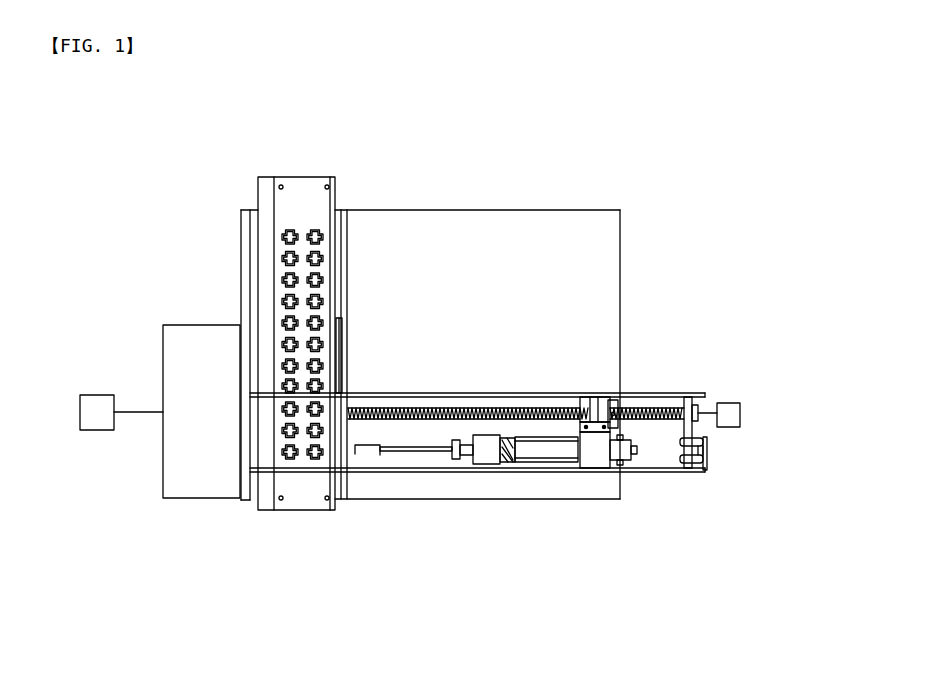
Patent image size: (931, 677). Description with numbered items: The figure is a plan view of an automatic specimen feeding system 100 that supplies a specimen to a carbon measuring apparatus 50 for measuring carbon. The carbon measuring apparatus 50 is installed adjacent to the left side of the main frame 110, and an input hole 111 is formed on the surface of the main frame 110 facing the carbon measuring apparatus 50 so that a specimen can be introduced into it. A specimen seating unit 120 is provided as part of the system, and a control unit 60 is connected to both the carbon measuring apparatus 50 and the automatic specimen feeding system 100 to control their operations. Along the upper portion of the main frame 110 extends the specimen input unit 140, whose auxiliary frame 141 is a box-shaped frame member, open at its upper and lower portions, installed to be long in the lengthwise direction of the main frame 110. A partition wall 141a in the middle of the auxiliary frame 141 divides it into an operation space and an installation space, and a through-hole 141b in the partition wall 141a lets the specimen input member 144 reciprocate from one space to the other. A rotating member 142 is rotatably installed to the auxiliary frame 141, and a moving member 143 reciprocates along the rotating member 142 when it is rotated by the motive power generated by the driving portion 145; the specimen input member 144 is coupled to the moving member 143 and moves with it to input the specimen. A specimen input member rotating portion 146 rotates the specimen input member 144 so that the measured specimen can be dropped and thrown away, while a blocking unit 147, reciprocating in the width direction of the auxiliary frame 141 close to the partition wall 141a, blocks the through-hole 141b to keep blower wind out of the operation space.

The automatic specimen feeding system 100 is at (201, 92).
The main frame 110 is at (621, 271).
The input hole 111 is at (250, 425).
The specimen seating unit 120 is at (313, 165).
The specimen input unit 140 is at (655, 587).
The auxiliary frame 141 is at (546, 473).
The partition wall 141a is at (350, 400).
The through-hole 141b is at (357, 456).
The rotating member 142 is at (648, 410).
The moving member 143 is at (598, 457).
The specimen input member 144 is at (488, 473).
The driving portion 145 is at (728, 402).
The specimen input member rotating portion 146 is at (700, 478).
The blocking unit 147 is at (341, 345).
The carbon measuring apparatus 50 is at (190, 328).
The control unit 60 is at (93, 433).